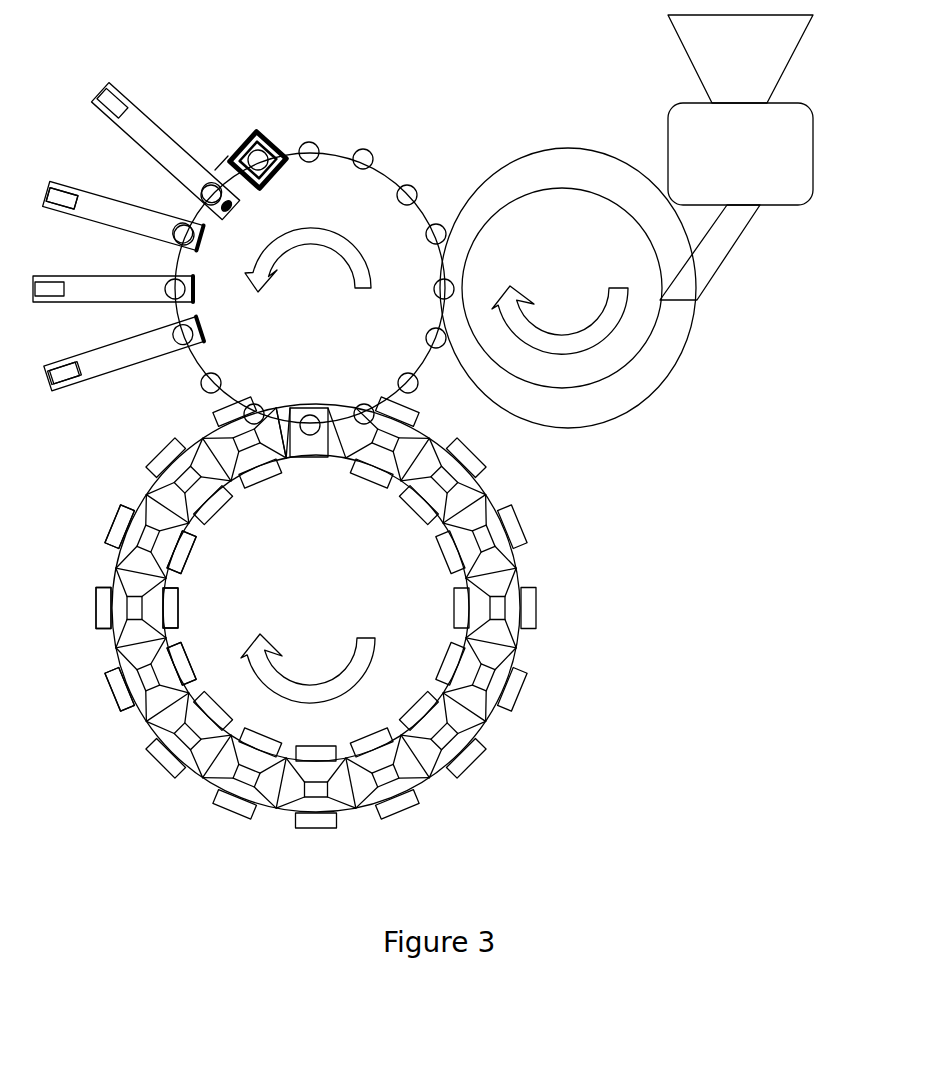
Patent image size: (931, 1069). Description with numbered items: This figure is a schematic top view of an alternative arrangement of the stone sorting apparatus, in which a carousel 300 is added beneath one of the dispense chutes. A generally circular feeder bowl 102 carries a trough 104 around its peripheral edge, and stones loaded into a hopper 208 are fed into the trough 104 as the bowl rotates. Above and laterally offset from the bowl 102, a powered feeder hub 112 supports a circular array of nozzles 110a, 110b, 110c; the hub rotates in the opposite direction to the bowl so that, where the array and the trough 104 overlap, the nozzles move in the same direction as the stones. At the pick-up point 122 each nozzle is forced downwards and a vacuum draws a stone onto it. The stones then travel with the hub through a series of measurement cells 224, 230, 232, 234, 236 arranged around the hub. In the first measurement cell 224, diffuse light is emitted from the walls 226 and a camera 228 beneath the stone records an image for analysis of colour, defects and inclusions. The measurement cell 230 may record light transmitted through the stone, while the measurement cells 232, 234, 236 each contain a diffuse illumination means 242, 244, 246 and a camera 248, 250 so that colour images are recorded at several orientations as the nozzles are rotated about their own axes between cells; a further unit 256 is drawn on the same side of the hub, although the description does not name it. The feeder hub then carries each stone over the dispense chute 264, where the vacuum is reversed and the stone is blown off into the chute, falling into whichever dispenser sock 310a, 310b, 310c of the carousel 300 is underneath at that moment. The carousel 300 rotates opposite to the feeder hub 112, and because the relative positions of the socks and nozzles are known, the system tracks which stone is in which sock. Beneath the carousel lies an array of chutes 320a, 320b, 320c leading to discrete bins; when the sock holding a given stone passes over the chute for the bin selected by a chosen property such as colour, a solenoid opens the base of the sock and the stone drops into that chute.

The feeder bowl 102 is at (532, 389).
The trough 104 is at (653, 363).
The nozzle 110a is at (408, 185).
The nozzle 110b is at (363, 148).
The nozzle 110c is at (311, 141).
The feeder hub 112 is at (435, 223).
The pick-up point 122 is at (444, 300).
The hopper 208 is at (690, 58).
The first measurement cell 224 is at (243, 140).
The walls of the cell 226 is at (283, 161).
The camera 228 is at (226, 163).
The measurement cell 230 is at (175, 139).
The measurement cell 232 is at (125, 200).
The measurement cell 234 is at (236, 211).
The measurement cell 236 is at (95, 90).
The diffuse illumination means 242 is at (202, 236).
The diffuse illumination means 244 is at (194, 292).
The diffuse illumination means 246 is at (200, 324).
The camera 248 is at (61, 182).
The camera 250 is at (44, 302).
The processing arm 256 is at (57, 393).
The dispense chute 264 is at (312, 404).
The carousel 300 is at (485, 708).
The dispenser sock 310a is at (127, 503).
The dispenser sock 310b is at (114, 568).
The dispenser sock 310c is at (114, 650).
The chute 320a is at (186, 556).
The chute 320b is at (177, 602).
The chute 320c is at (197, 640).